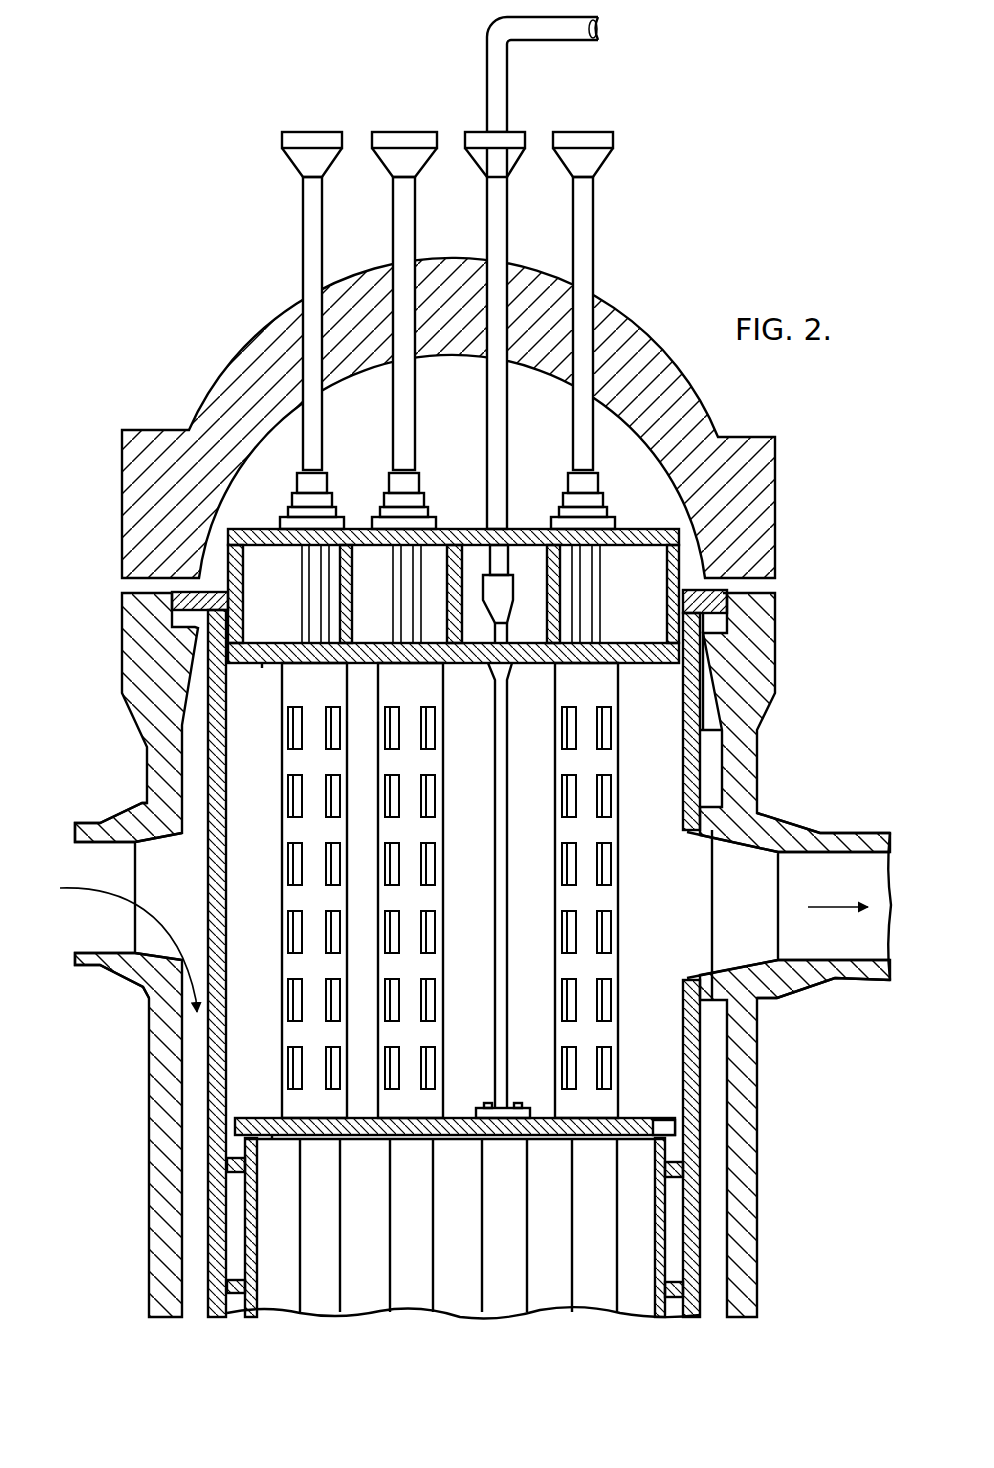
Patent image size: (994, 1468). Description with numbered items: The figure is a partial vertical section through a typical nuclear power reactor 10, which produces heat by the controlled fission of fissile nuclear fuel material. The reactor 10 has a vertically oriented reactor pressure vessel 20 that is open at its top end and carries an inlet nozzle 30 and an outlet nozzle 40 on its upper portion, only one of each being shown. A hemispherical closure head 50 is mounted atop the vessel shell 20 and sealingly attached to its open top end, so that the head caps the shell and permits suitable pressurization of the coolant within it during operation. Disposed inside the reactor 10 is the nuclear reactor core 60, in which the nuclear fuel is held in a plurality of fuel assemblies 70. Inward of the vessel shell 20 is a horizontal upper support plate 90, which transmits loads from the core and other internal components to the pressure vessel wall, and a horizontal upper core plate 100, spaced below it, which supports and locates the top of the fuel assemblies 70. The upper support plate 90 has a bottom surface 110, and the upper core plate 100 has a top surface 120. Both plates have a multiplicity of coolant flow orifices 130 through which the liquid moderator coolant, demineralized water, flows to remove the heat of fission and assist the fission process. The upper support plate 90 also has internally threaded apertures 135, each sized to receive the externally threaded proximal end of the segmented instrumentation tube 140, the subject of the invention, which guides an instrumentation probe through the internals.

The nuclear power reactor 10 is at (572, 122).
The reactor pressure vessel 20 is at (745, 630).
The inlet nozzle 30 is at (121, 826).
The outlet nozzle 40 is at (790, 832).
The hemispherical closure head 50 is at (620, 330).
The nuclear reactor core 60 is at (585, 1215).
The fuel assemblies 70 is at (594, 1298).
The upper support plate 90 is at (665, 650).
The upper core plate 100 is at (675, 1123).
The bottom surface 110 is at (627, 667).
The top surface 120 is at (668, 1120).
The coolant flow orifices 130 is at (262, 664).
The internally threaded apertures 135 is at (505, 648).
The segmented instrumentation tube 140 is at (489, 740).